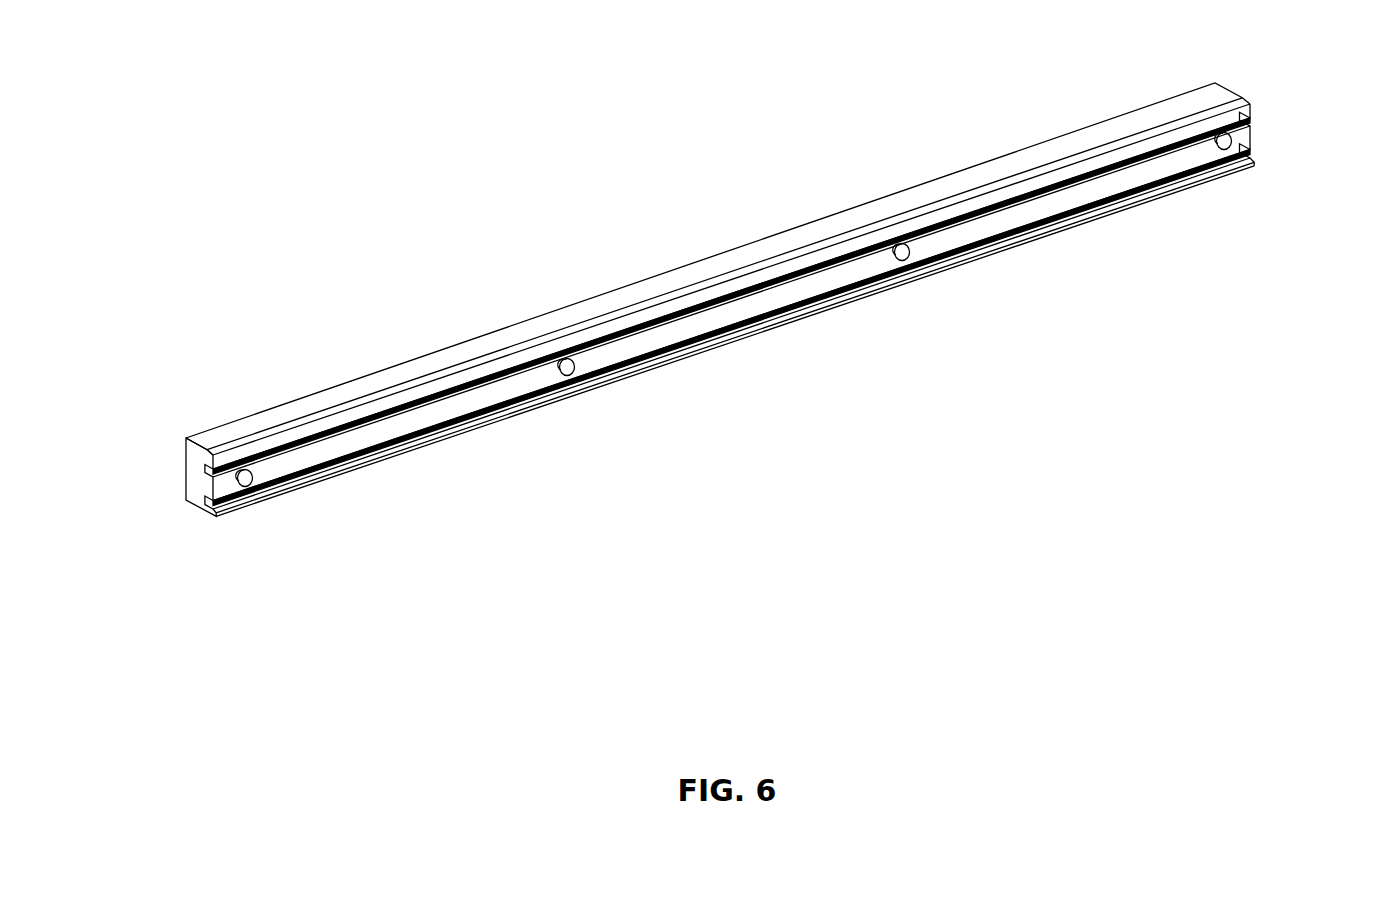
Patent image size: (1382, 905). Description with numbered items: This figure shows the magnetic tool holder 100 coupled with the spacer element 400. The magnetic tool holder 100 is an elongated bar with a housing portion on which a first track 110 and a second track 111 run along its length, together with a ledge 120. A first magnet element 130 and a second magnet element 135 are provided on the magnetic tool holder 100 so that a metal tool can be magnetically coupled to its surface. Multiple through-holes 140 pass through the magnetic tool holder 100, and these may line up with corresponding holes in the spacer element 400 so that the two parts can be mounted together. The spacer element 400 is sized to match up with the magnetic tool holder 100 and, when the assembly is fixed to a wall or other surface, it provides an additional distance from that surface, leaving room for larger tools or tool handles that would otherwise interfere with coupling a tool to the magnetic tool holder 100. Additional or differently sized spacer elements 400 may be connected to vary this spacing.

The magnetic tool holder 100 is at (312, 460).
The first track 110 is at (212, 460).
The second track 111 is at (213, 499).
The ledge 120 is at (263, 506).
The first magnet element 130 is at (1238, 121).
The second magnet element 135 is at (1240, 150).
The through-holes 140 is at (237, 481).
The spacer element 400 is at (273, 407).